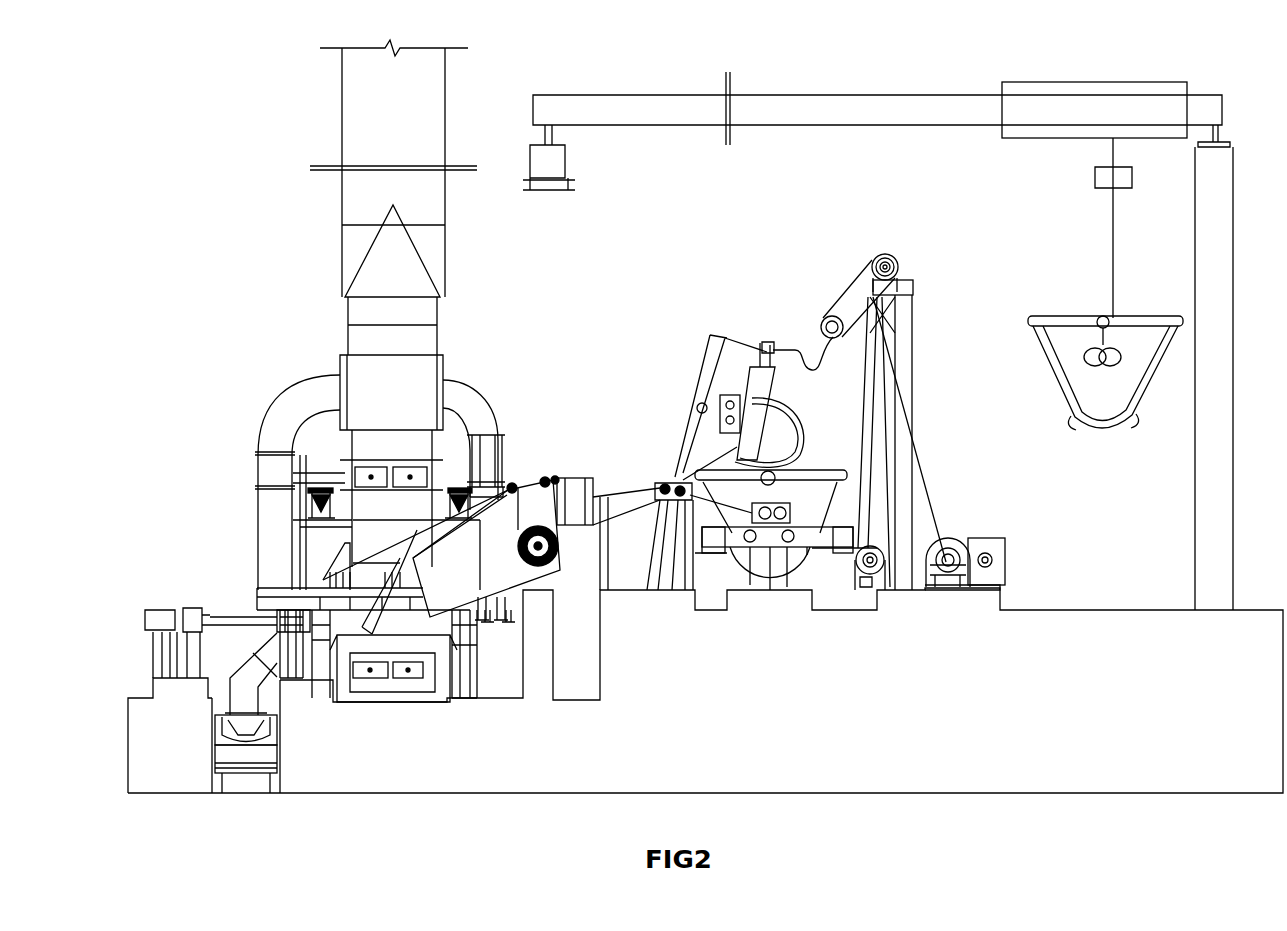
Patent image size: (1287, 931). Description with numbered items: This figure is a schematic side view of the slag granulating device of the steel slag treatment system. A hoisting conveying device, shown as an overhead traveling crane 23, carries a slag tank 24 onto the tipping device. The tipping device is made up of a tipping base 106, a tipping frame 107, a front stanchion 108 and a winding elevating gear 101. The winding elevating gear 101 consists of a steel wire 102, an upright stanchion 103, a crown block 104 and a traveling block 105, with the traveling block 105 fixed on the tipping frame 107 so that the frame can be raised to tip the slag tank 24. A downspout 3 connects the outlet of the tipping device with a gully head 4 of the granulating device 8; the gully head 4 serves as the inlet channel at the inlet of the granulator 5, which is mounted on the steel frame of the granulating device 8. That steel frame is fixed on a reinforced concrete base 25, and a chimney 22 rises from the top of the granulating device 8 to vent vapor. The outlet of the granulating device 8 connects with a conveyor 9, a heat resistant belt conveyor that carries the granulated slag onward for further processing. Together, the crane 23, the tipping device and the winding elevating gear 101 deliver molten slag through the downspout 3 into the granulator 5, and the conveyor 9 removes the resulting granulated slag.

The downspout 3 is at (608, 507).
The gully head 4 is at (575, 507).
The granulator 5 is at (520, 482).
The granulating device 8 is at (355, 325).
The conveyor 9 is at (217, 747).
The chimney 22 is at (360, 150).
The overhead traveling crane 23 is at (1043, 98).
The slag tank 24 is at (1067, 400).
The reinforced concrete base 25 is at (1103, 612).
The winding elevating gear 101 is at (1000, 537).
The steel wire 102 is at (947, 503).
The upright stanchion 103 is at (905, 413).
The crown block 104 is at (900, 257).
The traveling block 105 is at (876, 550).
The tipping base 106 is at (775, 503).
The tipping frame 107 is at (778, 560).
The front stanchion 108 is at (660, 485).